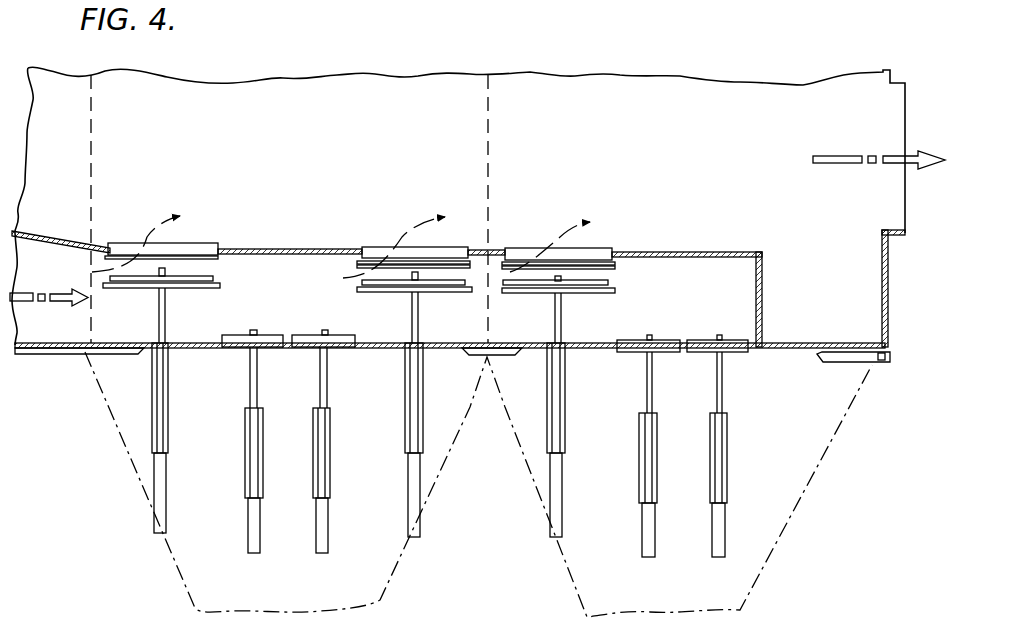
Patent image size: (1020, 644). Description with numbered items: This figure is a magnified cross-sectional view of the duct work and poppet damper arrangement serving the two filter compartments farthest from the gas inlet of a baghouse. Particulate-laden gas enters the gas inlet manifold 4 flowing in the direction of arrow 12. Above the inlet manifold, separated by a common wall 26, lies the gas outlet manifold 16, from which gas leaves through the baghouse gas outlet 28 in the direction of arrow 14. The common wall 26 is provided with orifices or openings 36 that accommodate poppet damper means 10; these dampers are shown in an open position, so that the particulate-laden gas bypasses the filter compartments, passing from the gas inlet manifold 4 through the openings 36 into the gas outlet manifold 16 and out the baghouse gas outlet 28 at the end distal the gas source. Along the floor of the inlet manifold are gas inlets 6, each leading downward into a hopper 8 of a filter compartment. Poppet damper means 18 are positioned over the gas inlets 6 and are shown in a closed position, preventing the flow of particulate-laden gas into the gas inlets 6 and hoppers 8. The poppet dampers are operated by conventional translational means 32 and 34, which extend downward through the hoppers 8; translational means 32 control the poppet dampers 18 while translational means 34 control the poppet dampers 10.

The gas inlet manifold 4 is at (133, 320).
The gas inlet 6 is at (270, 348).
The hopper 8 is at (295, 584).
The poppet damper means 10 is at (180, 288).
The arrow 12 is at (90, 272).
The arrow 14 is at (828, 164).
The gas outlet manifold 16 is at (284, 166).
The poppet damper means 18 is at (266, 334).
The common wall 26 is at (42, 233).
The baghouse gas outlet 28 is at (899, 238).
The translational means 32 is at (313, 462).
The translational means 34 is at (169, 436).
The orifice or opening 36 is at (208, 244).